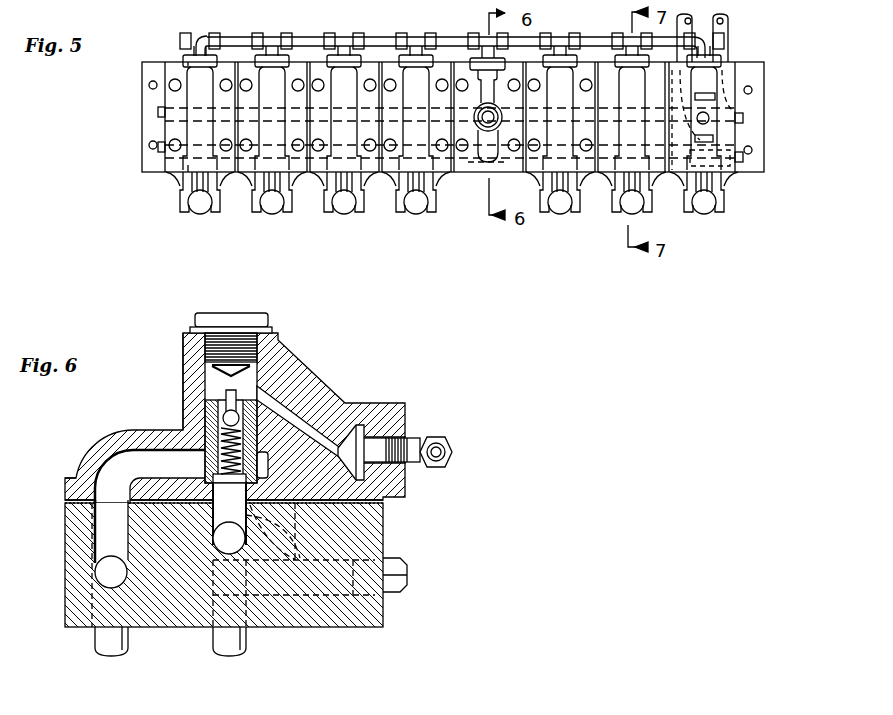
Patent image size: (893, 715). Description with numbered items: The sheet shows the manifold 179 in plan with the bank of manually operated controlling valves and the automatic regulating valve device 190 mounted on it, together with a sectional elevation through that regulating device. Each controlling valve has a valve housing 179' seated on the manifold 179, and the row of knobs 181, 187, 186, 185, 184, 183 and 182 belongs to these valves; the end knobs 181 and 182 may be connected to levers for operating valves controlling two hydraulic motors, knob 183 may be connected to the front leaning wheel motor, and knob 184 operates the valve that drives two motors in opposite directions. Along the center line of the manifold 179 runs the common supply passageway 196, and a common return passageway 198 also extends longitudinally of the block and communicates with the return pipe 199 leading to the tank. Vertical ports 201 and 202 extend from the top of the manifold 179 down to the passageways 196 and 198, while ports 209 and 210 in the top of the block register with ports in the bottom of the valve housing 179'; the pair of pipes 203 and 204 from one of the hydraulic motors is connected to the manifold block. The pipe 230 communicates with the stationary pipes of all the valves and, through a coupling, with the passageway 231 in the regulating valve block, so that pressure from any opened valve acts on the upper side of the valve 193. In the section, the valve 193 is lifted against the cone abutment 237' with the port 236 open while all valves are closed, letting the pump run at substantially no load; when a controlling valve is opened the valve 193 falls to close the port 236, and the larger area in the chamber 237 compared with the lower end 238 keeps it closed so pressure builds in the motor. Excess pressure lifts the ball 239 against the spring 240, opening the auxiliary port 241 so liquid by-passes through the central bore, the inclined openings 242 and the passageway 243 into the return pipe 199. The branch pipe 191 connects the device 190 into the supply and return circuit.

In FIG. 5, the manifold 179 is at (412, 117).
In FIG. 6, the manifold 179 is at (272, 568).
In FIG. 5, the valve housing 179' is at (151, 142).
In FIG. 5, the end knob 181 is at (198, 208).
In FIG. 5, the end knob 182 is at (705, 210).
In FIG. 5, the knob 183 is at (630, 212).
In FIG. 5, the knob 184 is at (558, 208).
In FIG. 5, the check valve unit 185 is at (415, 208).
In FIG. 5, the check valve unit 186 is at (345, 208).
In FIG. 5, the check valve unit 187 is at (272, 208).
In FIG. 5, the regulating valve device 190 is at (463, 72).
In FIG. 6, the regulating valve device 190 is at (138, 415).
In FIG. 6, the branch pipe 191 is at (218, 643).
In FIG. 6, the valve 193 is at (215, 422).
In FIG. 5, the longitudinal horizontal passageway 196 is at (735, 100).
In FIG. 6, the longitudinal horizontal passageway 196 is at (232, 542).
In FIG. 5, the return passageway 198 is at (468, 162).
In FIG. 6, the return passageway 198 is at (108, 572).
In FIG. 6, the return pipe 199 is at (105, 643).
In FIG. 5, the vertical port 201 is at (708, 118).
In FIG. 5, the vertical port 202 is at (738, 162).
In FIG. 5, the pipe 203 is at (690, 22).
In FIG. 5, the pipe 204 is at (730, 24).
In FIG. 5, the port 209 is at (712, 137).
In FIG. 5, the port 210 is at (715, 95).
In FIG. 5, the pipe 230 is at (238, 36).
In FIG. 6, the passageway 231 is at (320, 408).
In FIG. 6, the port 236 is at (150, 452).
In FIG. 6, the chamber 237 is at (203, 340).
In FIG. 6, the cone abutment 237' is at (236, 325).
In FIG. 6, the lower end 238 is at (222, 493).
In FIG. 6, the ball 239 is at (262, 406).
In FIG. 6, the spring 240 is at (308, 425).
In FIG. 6, the auxiliary port 241 is at (280, 352).
In FIG. 6, the inclined openings 242 is at (205, 478).
In FIG. 6, the passageway 243 is at (115, 476).